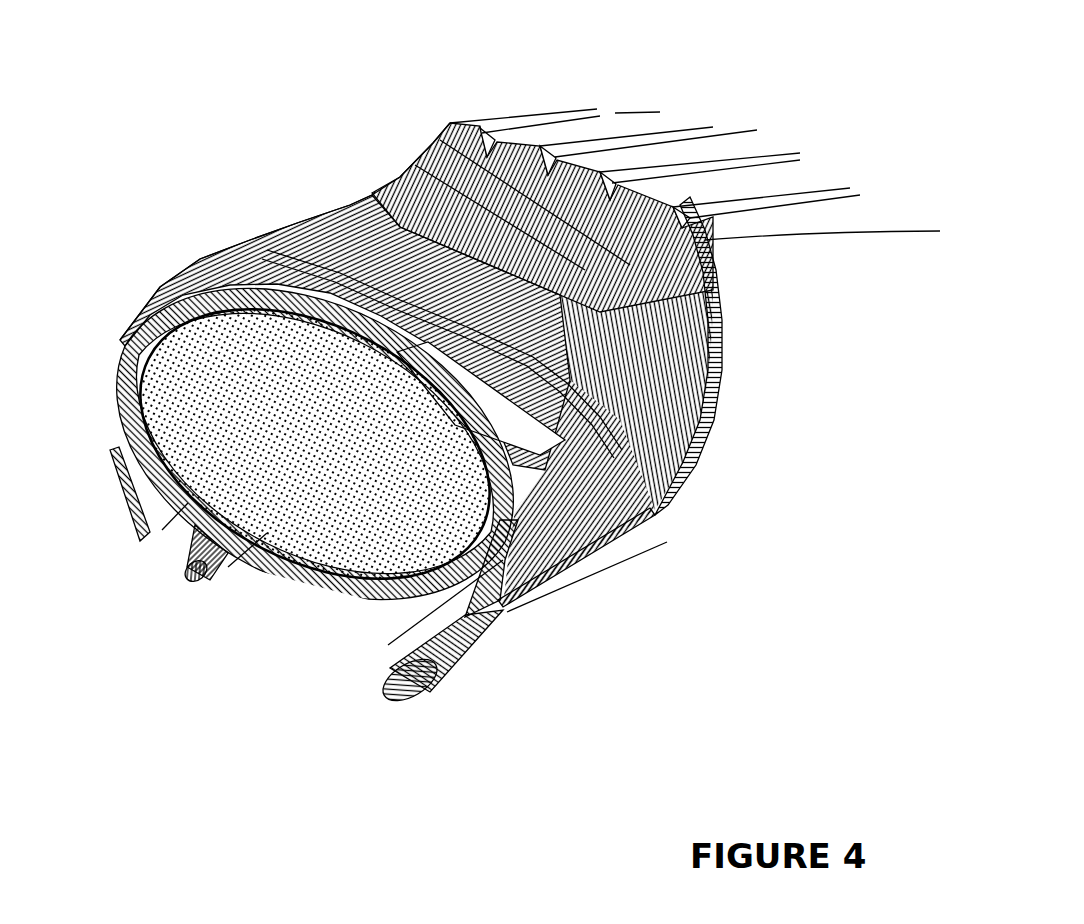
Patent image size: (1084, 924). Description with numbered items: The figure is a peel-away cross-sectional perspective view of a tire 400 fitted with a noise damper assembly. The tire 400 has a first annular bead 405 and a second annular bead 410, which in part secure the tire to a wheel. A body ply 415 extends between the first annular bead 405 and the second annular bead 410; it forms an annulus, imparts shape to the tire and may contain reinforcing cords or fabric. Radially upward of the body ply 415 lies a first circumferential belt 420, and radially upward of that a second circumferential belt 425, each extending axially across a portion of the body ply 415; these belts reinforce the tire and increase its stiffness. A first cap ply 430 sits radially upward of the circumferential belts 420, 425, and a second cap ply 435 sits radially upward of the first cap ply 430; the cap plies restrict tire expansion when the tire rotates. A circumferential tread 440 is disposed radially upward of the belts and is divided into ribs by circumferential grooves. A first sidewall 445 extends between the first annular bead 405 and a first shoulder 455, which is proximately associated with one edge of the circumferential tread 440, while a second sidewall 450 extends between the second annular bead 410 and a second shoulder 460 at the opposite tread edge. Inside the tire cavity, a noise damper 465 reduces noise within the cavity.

The tire 400 is at (158, 145).
The first annular bead 405 is at (187, 573).
The second annular bead 410 is at (440, 675).
The body ply 415 is at (503, 612).
The first circumferential belt 420 is at (330, 198).
The second circumferential belt 425 is at (357, 177).
The first cap ply 430 is at (407, 167).
The second cap ply 435 is at (443, 157).
The circumferential tread 440 is at (487, 120).
The first sidewall 445 is at (120, 507).
The second sidewall 450 is at (813, 360).
The first shoulder 455 is at (175, 263).
The second shoulder 460 is at (820, 267).
The noise damper 465 is at (305, 535).